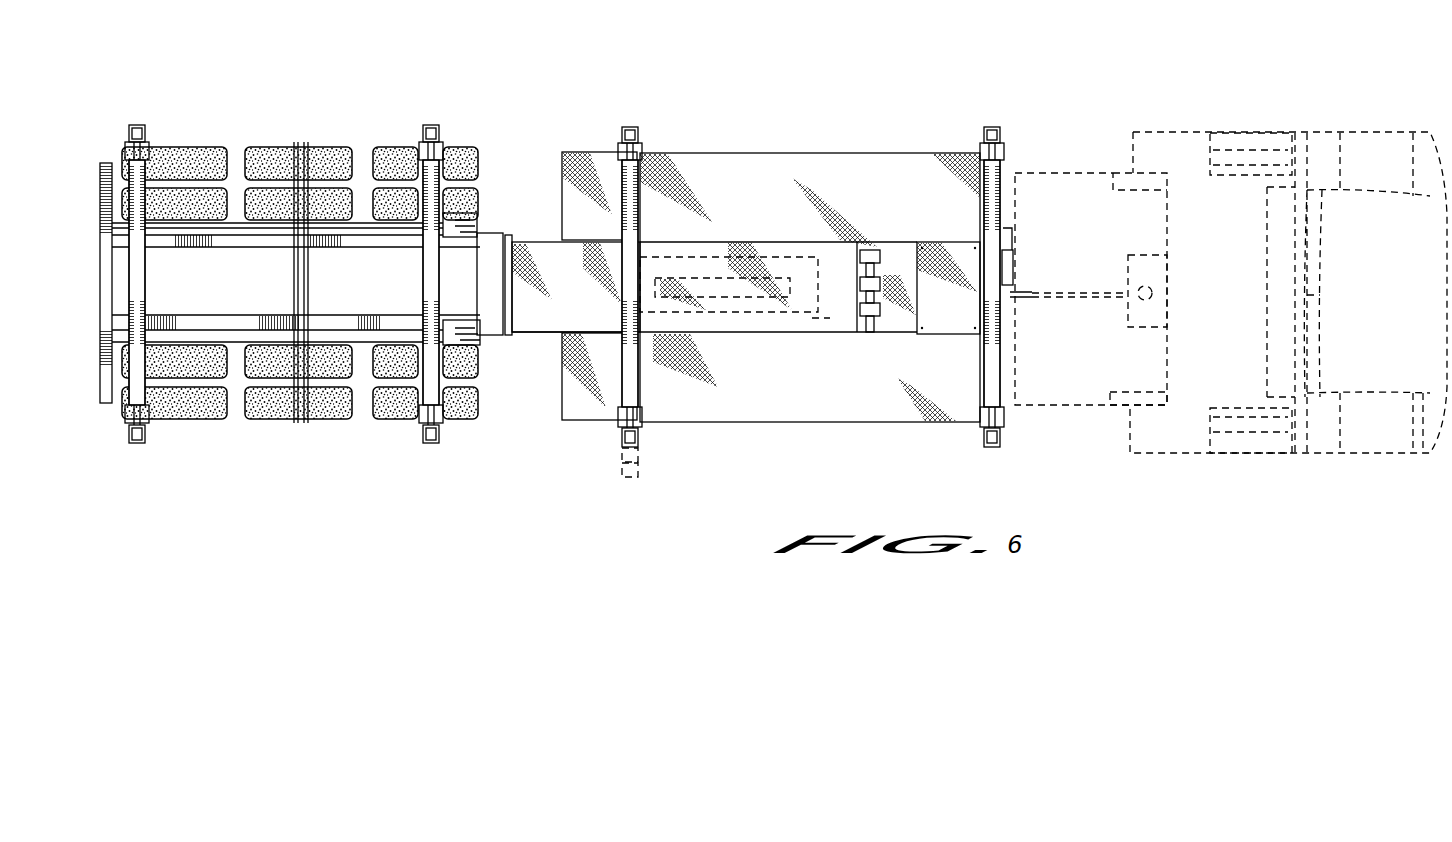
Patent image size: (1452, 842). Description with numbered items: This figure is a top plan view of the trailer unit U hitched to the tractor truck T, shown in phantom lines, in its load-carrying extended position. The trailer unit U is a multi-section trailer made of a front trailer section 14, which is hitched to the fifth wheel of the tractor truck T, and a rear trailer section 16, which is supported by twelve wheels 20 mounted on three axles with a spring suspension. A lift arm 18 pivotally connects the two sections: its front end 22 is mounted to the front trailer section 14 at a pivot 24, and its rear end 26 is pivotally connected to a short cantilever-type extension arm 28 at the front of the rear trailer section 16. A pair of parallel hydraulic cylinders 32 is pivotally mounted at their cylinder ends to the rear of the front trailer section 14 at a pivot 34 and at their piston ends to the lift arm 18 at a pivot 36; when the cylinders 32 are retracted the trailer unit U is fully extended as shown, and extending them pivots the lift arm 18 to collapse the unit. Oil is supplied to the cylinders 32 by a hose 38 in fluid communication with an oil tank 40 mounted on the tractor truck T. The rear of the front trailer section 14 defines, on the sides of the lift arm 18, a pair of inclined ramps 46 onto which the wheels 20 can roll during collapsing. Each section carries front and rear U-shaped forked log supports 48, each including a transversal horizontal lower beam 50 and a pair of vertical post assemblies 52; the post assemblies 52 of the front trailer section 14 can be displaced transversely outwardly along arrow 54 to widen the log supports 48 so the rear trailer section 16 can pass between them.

The front trailer section 14 is at (781, 150).
The rear trailer section 16 is at (100, 368).
The lift arm 18 is at (537, 342).
The wheels 20 is at (380, 193).
The front end 22 is at (840, 328).
The pivot 24 is at (878, 306).
The rear end 26 is at (540, 250).
The extension arm 28 is at (511, 345).
The cylinders 32 is at (733, 254).
The pivot 34 is at (658, 300).
The pivot 36 is at (820, 325).
The hose 38 is at (1060, 302).
The oil tank 40 is at (1128, 330).
The inclined ramps 46 is at (585, 165).
The log supports 48 is at (440, 128).
The lower beam 50 is at (150, 282).
The post assemblies 52 is at (138, 124).
The arrow 54 is at (656, 452).
The trailer unit U is at (593, 280).
The tractor truck T is at (1228, 246).